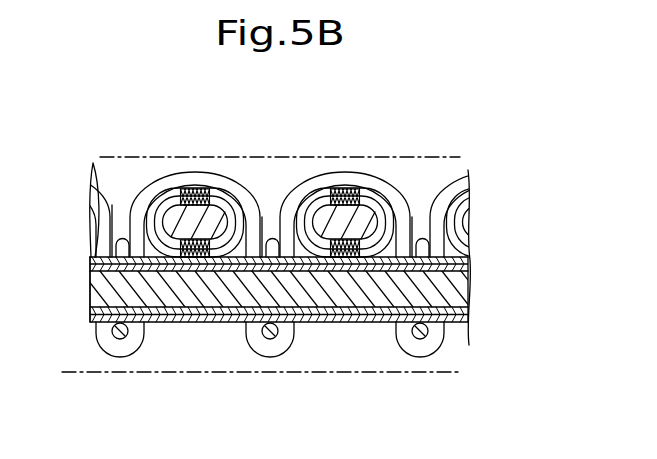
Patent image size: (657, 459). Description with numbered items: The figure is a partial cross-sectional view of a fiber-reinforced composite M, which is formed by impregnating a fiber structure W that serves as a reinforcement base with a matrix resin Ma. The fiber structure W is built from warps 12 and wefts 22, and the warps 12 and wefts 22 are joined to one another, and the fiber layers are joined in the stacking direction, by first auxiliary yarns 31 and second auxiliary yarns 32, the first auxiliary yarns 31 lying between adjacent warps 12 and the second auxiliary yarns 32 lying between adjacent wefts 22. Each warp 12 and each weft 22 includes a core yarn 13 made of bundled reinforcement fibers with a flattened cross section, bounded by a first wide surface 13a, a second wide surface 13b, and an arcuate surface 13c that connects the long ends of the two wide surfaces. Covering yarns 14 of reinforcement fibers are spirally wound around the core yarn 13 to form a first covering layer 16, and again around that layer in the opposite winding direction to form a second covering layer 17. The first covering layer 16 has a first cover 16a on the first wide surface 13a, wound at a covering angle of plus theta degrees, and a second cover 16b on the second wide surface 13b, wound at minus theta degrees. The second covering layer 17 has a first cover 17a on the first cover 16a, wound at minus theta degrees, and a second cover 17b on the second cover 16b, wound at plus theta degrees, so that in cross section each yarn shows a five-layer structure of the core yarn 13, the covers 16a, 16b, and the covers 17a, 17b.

The warp 12 is at (231, 206).
The core yarn 13 is at (142, 208).
The first wide surface 13a is at (150, 180).
The second wide surface 13b is at (168, 323).
The arcuate surface 13c is at (256, 213).
The covering yarn 14 is at (141, 190).
The first covering layer 16 is at (92, 267).
The first cover 16a is at (211, 268).
The second cover 16b is at (222, 316).
The second covering layer 17 is at (95, 258).
The first cover 17a is at (191, 191).
The second cover 17b is at (196, 252).
The weft 22 is at (92, 290).
The first auxiliary yarn 31 is at (107, 360).
The second auxiliary yarn 32 is at (137, 360).
The fiber-reinforced composite M is at (492, 149).
The matrix resin Ma is at (440, 157).
The fiber structure W is at (475, 182).